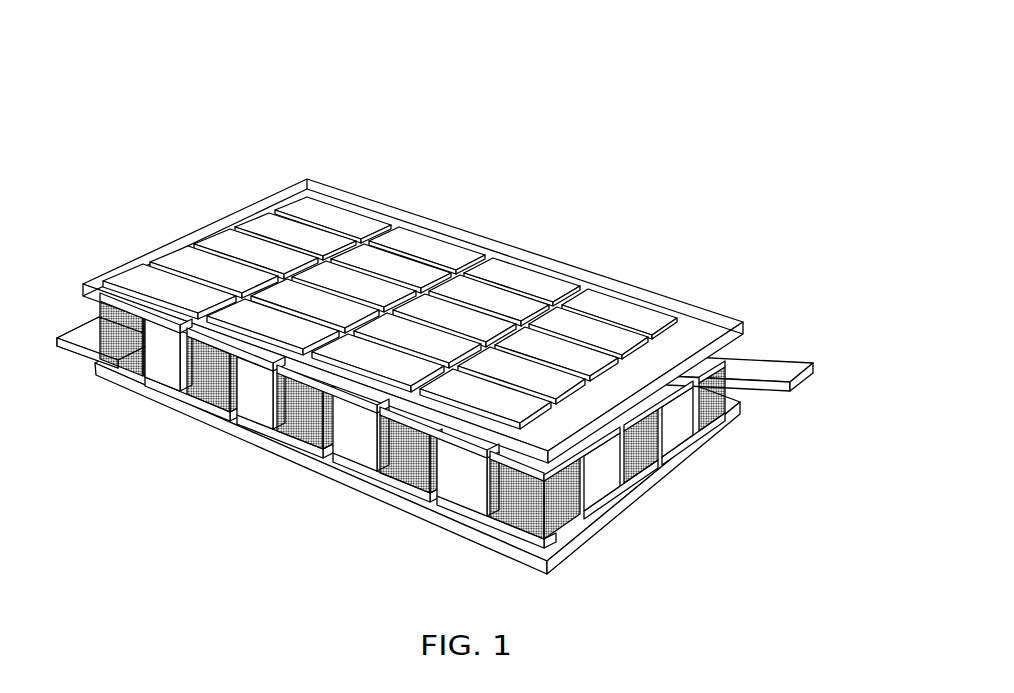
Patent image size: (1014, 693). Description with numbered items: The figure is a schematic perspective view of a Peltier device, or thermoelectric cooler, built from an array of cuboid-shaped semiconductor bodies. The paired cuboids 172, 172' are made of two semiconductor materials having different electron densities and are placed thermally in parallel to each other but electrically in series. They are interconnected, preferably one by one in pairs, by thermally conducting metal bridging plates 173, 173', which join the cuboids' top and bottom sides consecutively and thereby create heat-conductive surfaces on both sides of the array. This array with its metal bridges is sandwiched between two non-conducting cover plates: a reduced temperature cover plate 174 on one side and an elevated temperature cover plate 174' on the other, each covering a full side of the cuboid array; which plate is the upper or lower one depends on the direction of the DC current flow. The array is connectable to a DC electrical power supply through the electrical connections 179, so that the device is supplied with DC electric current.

The elevated temperature cover plate 174' is at (413, 233).
The reduced temperature cover plate 174 is at (400, 408).
The electrical connections 179 is at (58, 250).
The thermally conducting metal bridging plate 173 is at (391, 468).
The thermally conducting metal bridging plate 173' is at (412, 387).
The cuboid 172 is at (515, 420).
The cuboid 172' is at (162, 355).